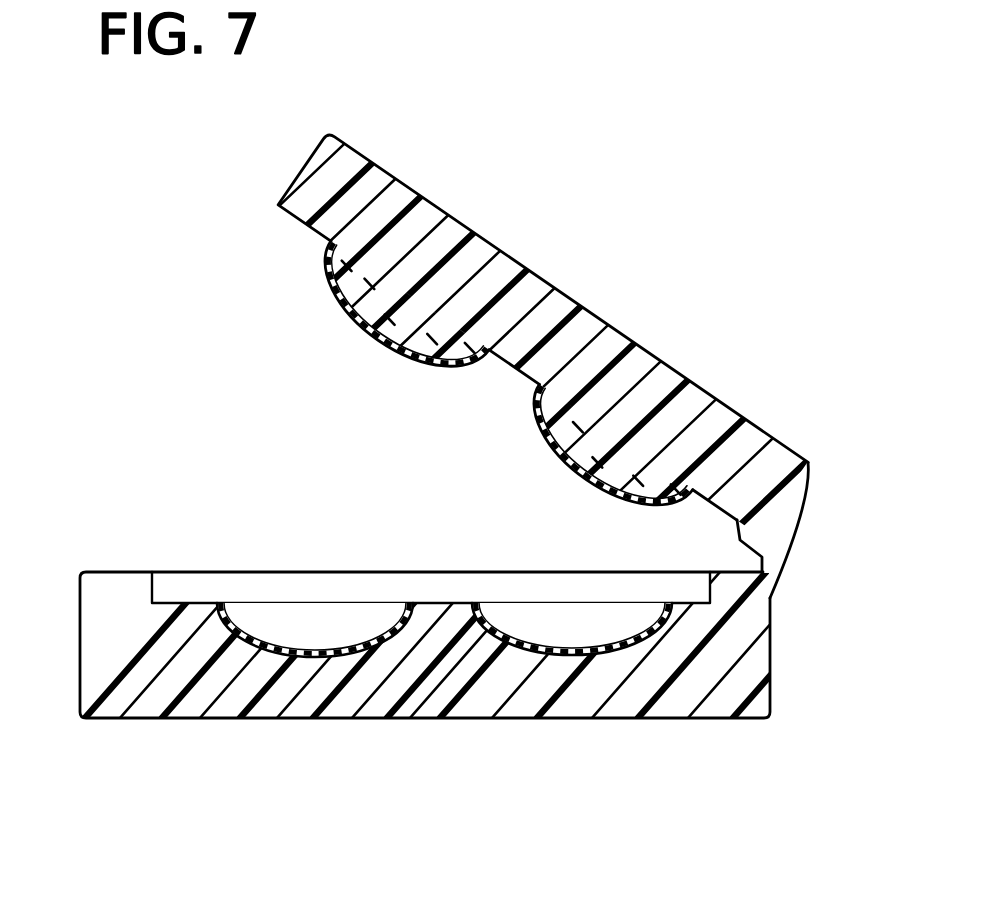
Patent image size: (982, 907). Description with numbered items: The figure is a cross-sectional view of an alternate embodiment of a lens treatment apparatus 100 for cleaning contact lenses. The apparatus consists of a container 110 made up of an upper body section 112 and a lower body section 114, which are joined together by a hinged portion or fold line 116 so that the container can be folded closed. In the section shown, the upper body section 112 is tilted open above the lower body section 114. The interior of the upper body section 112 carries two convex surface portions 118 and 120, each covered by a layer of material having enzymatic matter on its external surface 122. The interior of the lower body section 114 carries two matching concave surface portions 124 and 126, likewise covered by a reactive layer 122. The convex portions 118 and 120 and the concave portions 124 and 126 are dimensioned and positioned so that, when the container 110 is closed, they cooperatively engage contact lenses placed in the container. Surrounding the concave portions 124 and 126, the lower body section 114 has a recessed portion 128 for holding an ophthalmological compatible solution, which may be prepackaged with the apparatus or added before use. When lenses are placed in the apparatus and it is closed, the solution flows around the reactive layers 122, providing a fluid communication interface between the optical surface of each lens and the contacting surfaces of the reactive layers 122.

The lens treatment apparatus 100 is at (172, 755).
The container 110 is at (473, 656).
The upper body section 112 is at (548, 360).
The lower body section 114 is at (425, 686).
The hinged portion or fold line 116 is at (770, 562).
The convex surface portion 118 is at (378, 303).
The convex surface portion 120 is at (590, 430).
The layer of material having enzymatic matter on its external surface 122 is at (352, 320).
The concave surface portion 124 is at (305, 657).
The concave surface portion 126 is at (583, 650).
The recessed portion 128 is at (242, 590).